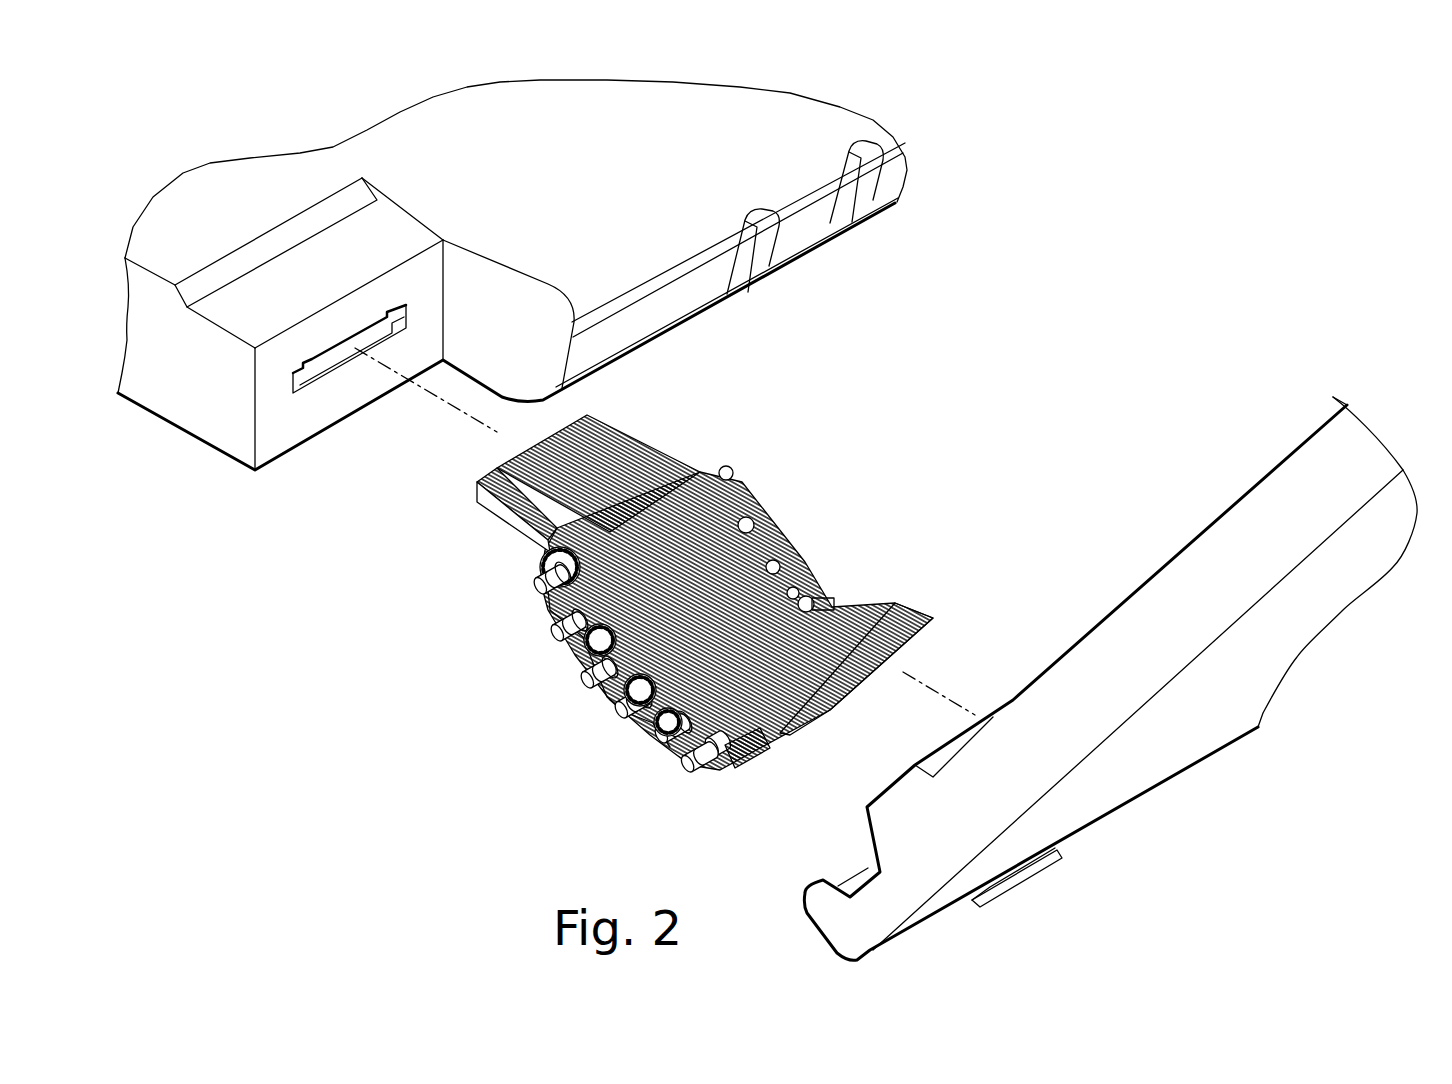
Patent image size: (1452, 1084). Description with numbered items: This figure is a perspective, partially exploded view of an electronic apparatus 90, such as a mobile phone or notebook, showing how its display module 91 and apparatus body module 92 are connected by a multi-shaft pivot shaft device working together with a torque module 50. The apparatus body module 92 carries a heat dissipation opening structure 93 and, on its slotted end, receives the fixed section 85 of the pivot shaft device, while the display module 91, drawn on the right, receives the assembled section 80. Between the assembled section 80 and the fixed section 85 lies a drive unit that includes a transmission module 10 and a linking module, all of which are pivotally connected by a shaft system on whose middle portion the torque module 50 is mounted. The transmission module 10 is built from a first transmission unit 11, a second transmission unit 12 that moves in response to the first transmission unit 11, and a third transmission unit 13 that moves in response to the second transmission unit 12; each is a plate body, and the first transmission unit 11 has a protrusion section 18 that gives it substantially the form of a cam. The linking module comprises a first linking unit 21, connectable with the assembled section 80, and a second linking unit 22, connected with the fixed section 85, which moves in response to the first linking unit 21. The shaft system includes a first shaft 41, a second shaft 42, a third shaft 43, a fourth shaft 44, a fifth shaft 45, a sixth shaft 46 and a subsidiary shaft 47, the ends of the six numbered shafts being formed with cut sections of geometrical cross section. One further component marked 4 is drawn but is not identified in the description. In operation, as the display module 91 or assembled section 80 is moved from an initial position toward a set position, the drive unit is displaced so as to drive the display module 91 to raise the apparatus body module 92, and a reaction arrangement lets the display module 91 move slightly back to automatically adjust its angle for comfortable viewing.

The electronic apparatus 90 is at (262, 132).
The apparatus body module 92 is at (175, 215).
The heat dissipation opening structure 93 is at (862, 182).
The display module 91 is at (1223, 548).
The fixed section 85 is at (660, 432).
The torque module 50 is at (512, 459).
The assembled section 80 is at (945, 603).
The transmission module 10 is at (580, 738).
The pivot pin 4 is at (537, 587).
The third transmission unit 13 is at (537, 614).
The second transmission unit 12 is at (597, 702).
The first transmission unit 11 is at (670, 755).
The second shaft 42 is at (663, 737).
The subsidiary shaft 47 is at (695, 767).
The protrusion section 18 is at (720, 770).
The first shaft 41 is at (740, 763).
The sixth shaft 46 is at (733, 468).
The second linking unit 22 is at (750, 515).
The fifth shaft 45 is at (778, 560).
The fourth shaft 44 is at (800, 590).
The first linking unit 21 is at (814, 594).
The third shaft 43 is at (830, 598).